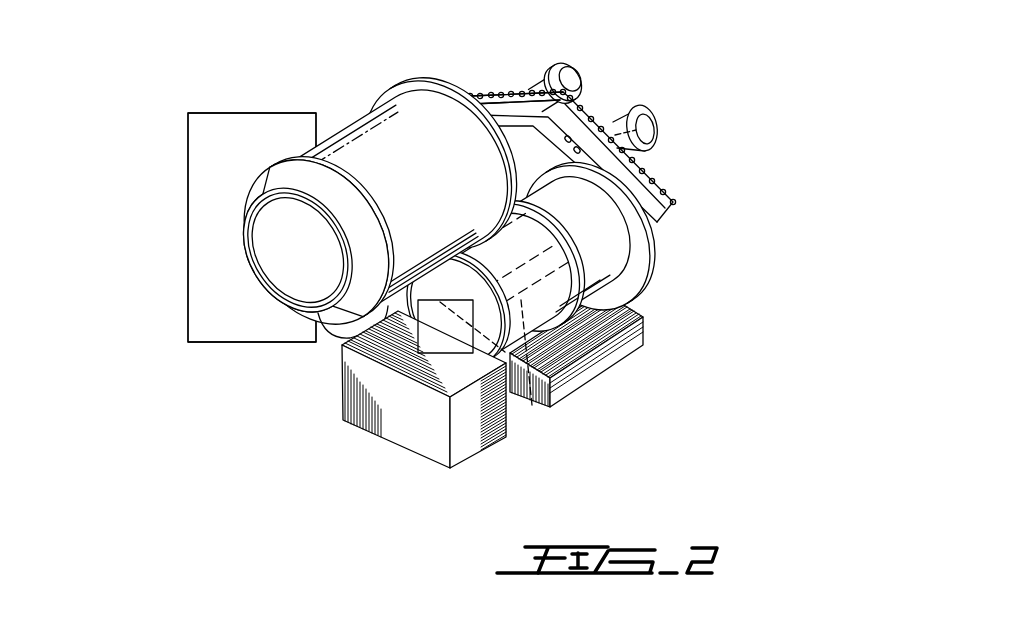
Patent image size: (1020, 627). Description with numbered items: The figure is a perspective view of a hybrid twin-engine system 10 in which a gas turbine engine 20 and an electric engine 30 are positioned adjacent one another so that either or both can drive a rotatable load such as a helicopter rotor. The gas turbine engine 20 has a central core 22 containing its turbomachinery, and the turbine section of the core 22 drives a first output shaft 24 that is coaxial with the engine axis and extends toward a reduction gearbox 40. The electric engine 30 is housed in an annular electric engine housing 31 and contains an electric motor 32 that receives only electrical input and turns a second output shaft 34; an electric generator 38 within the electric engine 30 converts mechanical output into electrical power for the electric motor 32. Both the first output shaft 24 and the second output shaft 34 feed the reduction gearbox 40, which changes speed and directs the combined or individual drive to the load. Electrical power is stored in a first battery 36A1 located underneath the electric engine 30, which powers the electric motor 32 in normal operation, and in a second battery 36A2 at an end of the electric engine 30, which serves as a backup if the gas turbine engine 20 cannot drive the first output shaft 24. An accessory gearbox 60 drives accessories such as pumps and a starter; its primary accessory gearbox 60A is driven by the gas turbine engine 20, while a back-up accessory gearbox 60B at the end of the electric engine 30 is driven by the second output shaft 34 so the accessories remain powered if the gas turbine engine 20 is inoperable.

The multiple engine system 10 is at (427, 273).
The gas turbine engine 20 is at (353, 128).
The central core 22 is at (388, 130).
The first output shaft 24 is at (500, 97).
The electric engine 30 is at (605, 242).
The electric engine housing 31 is at (595, 273).
The electric motor 32 is at (567, 297).
The second output shaft 34 is at (530, 397).
The first battery 36A1 is at (588, 370).
The second battery 36A2 is at (392, 418).
The electric generator 38 is at (637, 237).
The reduction gearbox 40 is at (605, 108).
The accessory gearbox 60 is at (188, 150).
The primary accessory gearbox 60A is at (252, 227).
The back-up accessory gearbox 60B is at (443, 353).